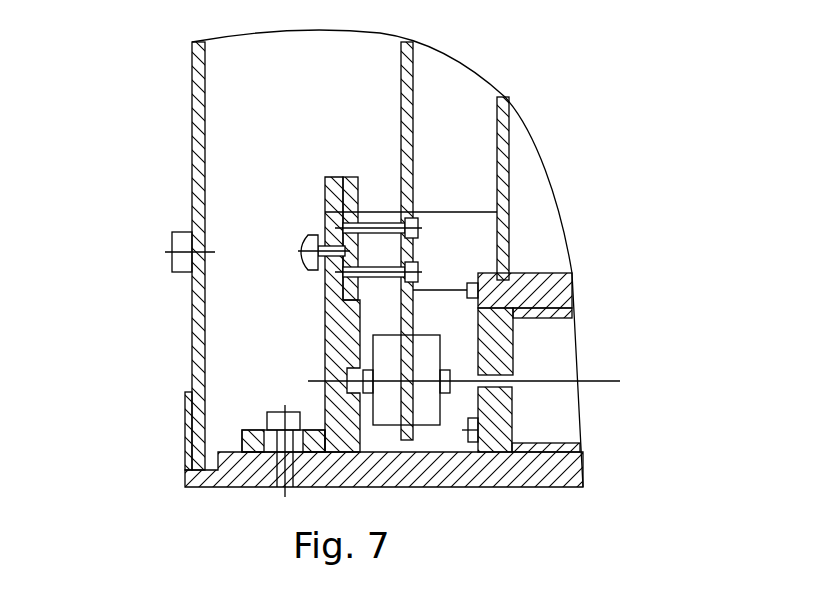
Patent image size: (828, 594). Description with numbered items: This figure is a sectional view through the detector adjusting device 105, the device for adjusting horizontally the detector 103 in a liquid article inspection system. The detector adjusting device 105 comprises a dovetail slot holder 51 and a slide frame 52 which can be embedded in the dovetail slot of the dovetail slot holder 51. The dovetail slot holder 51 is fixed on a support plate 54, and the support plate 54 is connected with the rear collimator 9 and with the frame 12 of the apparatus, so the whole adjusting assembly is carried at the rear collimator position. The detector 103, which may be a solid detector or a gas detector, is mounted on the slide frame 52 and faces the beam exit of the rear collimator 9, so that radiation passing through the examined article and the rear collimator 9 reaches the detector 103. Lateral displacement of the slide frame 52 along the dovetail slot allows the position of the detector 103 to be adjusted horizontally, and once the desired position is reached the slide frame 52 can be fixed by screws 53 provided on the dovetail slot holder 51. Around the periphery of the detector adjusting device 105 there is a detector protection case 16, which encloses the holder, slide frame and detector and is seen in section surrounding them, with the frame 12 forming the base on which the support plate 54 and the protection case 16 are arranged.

The rear collimator 9 is at (497, 470).
The frame 12 is at (187, 453).
The detector protection case 16 is at (192, 322).
The dovetail slot holder 51 is at (338, 202).
The slide frame 52 is at (385, 212).
The screws 53 is at (303, 255).
The support plate 54 is at (250, 470).
The detector 103 is at (423, 364).
The device for adjusting horizontally the detector 105 is at (325, 330).